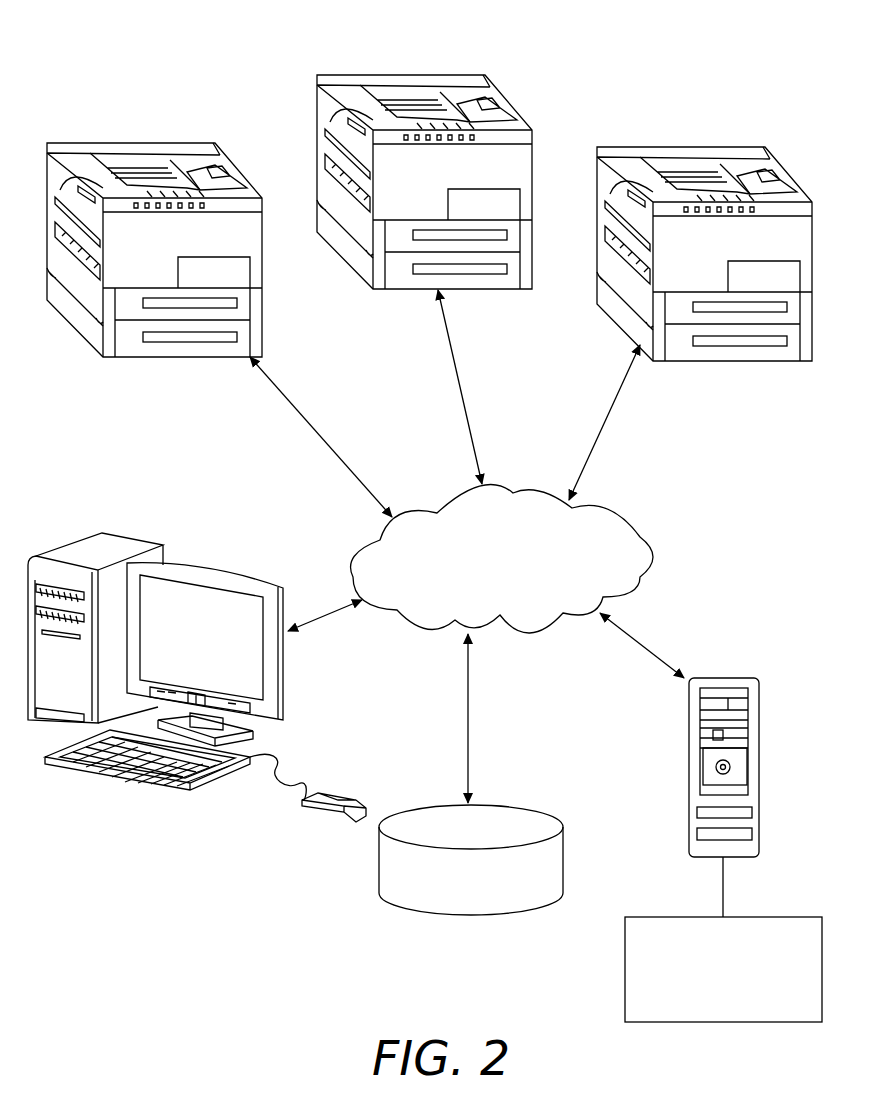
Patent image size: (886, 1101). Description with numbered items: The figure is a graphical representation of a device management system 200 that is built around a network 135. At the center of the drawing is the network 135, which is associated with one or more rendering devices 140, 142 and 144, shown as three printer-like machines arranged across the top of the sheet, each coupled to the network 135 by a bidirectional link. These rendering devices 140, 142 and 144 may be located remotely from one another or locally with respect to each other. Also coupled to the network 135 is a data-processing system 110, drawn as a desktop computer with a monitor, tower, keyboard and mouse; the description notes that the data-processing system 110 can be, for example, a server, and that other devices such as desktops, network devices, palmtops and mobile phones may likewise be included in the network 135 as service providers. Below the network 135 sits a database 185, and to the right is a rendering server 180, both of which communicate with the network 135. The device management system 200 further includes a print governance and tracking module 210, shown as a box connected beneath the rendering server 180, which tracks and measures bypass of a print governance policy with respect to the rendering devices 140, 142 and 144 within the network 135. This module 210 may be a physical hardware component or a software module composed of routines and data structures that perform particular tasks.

The data-processing system 110 is at (228, 603).
The network 135 is at (632, 523).
The rendering device 140 is at (458, 75).
The rendering device 142 is at (188, 143).
The rendering device 144 is at (740, 147).
The rendering server 180 is at (733, 675).
The database 185 is at (493, 818).
The device management system 200 is at (702, 61).
The print governance and tracking module 210 is at (625, 970).